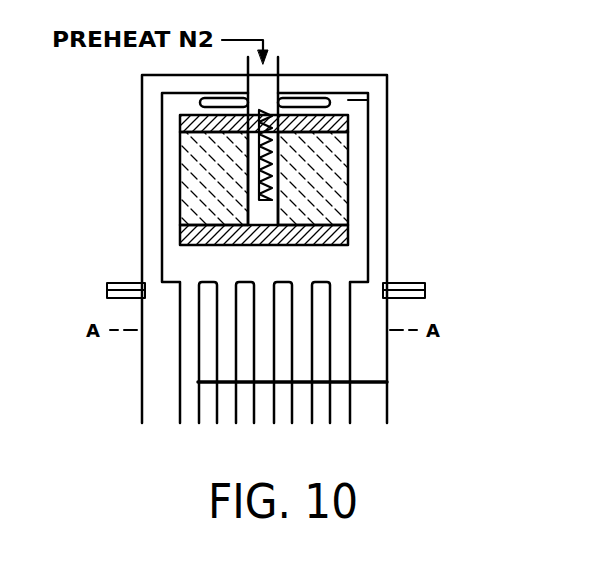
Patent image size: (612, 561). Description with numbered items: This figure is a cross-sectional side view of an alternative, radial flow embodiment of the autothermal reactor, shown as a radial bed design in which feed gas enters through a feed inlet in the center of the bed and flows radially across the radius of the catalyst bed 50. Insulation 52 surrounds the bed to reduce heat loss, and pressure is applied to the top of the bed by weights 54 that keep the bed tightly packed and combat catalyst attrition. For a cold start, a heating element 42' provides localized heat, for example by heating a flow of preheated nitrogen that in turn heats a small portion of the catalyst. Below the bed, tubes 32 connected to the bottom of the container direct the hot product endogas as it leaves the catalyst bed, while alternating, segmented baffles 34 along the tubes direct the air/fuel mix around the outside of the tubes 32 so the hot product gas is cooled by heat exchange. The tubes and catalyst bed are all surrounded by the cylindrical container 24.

The cylindrical container 24 is at (142, 383).
The tubes 32 is at (303, 347).
The baffles 34 is at (368, 384).
The heating element 42' is at (297, 125).
The catalyst bed 50 is at (213, 180).
The insulation 52 is at (345, 237).
The weights 54 is at (368, 100).